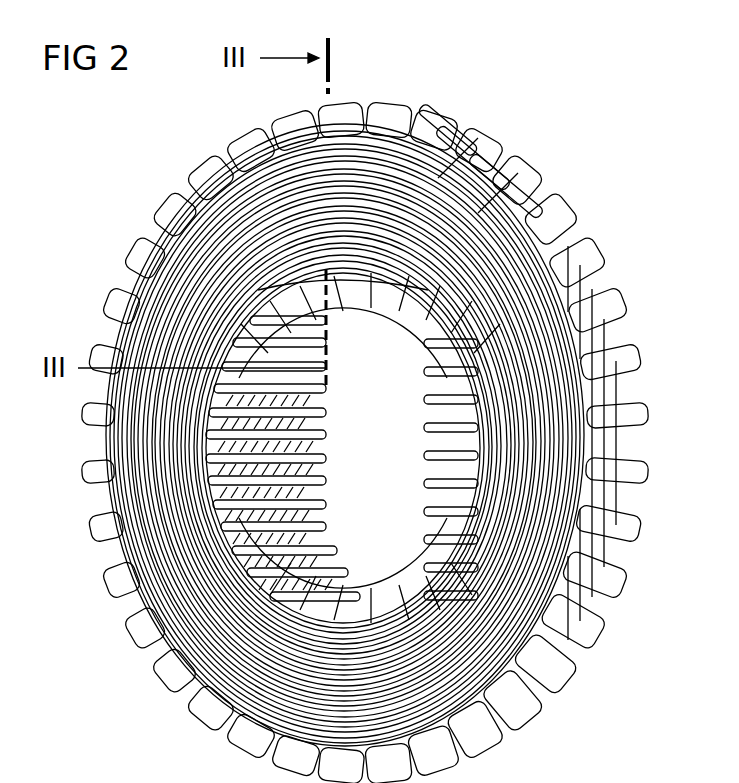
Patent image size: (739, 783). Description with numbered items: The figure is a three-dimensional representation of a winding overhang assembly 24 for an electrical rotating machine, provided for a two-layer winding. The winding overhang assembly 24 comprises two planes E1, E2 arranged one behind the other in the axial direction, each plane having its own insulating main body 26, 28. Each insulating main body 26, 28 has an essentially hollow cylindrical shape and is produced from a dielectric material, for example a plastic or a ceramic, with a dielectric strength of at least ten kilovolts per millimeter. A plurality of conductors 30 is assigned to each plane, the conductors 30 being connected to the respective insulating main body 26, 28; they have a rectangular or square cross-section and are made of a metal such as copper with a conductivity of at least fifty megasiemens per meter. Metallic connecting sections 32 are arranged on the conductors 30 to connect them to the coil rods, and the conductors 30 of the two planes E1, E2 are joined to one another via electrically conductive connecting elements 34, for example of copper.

The winding overhang assembly 24 is at (630, 122).
The insulating main body 26 is at (606, 393).
The insulating main body 28 is at (640, 440).
The conductors 30 is at (590, 275).
The metallic connecting sections 32 is at (120, 437).
The connecting elements 34 is at (563, 235).
The plane E1 is at (503, 170).
The plane E2 is at (562, 180).